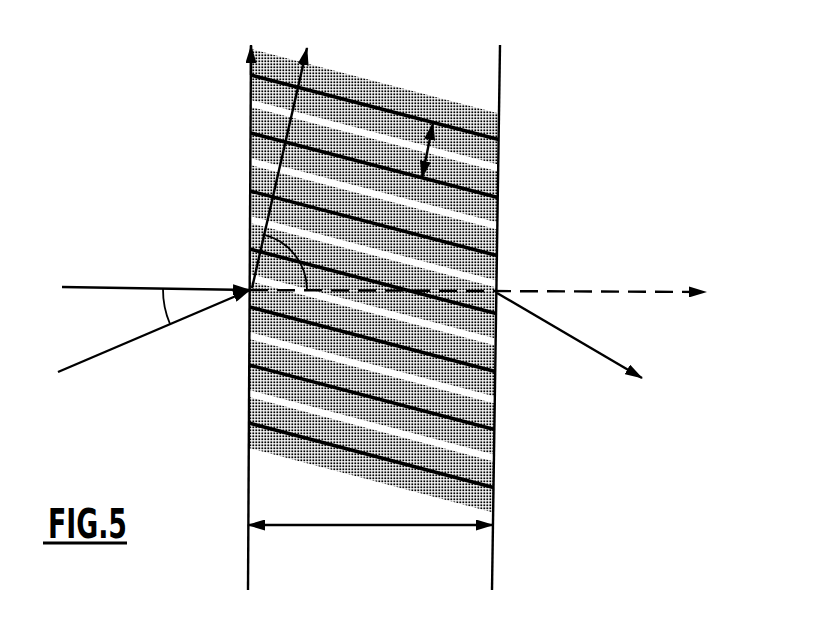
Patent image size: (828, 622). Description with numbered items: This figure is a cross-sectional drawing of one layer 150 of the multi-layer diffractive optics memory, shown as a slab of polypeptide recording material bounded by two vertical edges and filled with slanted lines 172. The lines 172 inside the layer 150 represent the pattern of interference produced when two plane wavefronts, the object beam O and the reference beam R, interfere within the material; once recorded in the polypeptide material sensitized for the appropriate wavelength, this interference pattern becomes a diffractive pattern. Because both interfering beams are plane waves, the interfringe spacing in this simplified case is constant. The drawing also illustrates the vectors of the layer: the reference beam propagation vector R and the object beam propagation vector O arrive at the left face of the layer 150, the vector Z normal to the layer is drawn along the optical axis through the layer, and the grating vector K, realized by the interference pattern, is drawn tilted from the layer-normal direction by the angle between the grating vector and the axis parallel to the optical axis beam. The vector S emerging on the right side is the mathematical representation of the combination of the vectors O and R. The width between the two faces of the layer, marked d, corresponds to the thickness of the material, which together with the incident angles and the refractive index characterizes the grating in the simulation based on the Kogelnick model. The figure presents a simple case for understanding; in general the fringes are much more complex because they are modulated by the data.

The layer 150 is at (225, 112).
The lines 172 is at (381, 166).
The object beam propagation vector O is at (156, 273).
The reference beam propagation vector R is at (154, 352).
The X axis X is at (255, 45).
The grating vector K is at (293, 157).
The layer normal vector Z is at (489, 297).
The combination vector S is at (586, 351).
The hologram thickness d is at (370, 507).